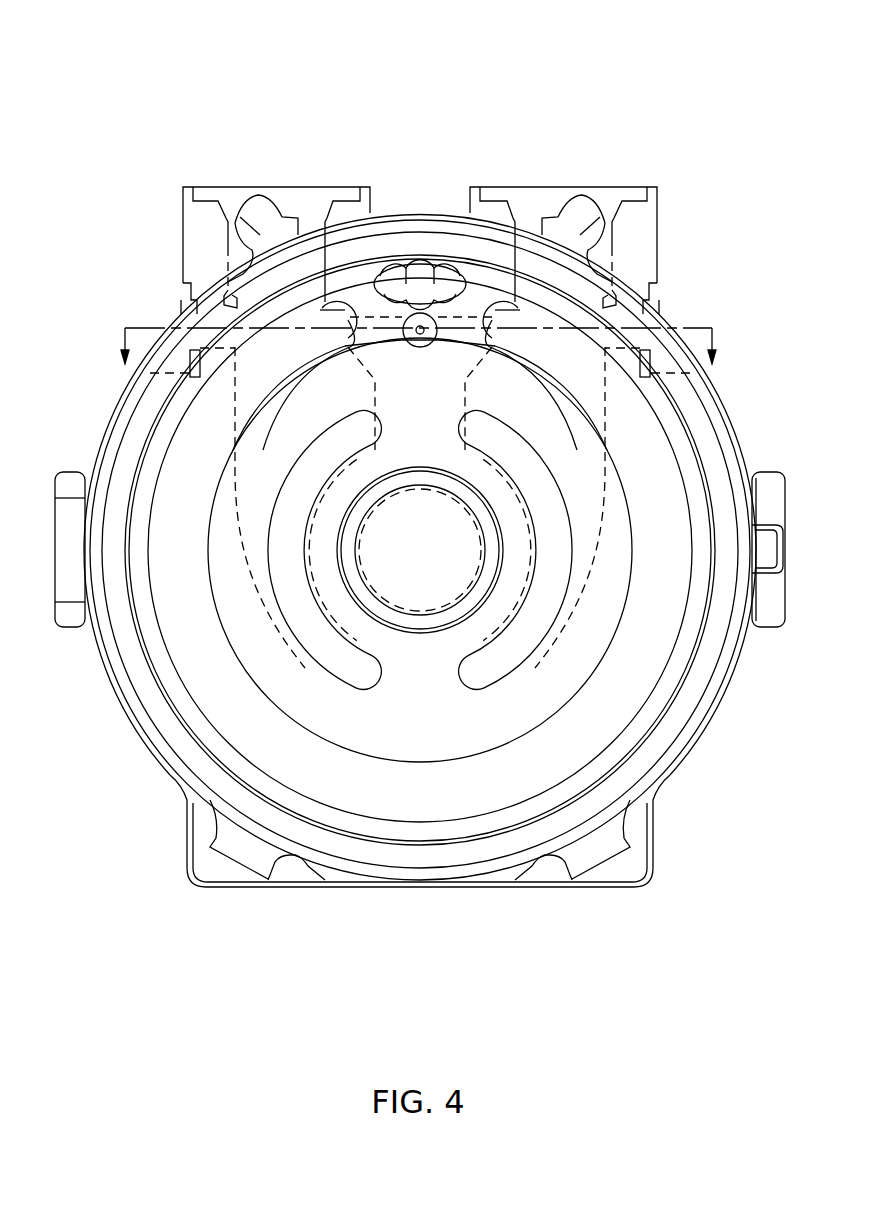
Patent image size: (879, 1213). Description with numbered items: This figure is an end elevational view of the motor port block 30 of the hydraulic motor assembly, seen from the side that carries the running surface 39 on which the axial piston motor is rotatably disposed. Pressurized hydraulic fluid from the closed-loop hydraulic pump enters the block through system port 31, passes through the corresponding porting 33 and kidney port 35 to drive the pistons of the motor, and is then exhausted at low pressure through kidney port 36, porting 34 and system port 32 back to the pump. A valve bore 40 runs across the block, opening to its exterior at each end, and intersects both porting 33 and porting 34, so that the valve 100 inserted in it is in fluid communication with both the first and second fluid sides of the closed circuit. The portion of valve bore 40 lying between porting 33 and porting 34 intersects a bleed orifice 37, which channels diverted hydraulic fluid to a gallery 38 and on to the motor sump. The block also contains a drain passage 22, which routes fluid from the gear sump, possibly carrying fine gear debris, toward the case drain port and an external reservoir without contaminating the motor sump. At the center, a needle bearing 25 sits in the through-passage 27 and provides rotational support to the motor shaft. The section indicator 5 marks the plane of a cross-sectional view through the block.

The motor port block 30 is at (100, 86).
The valve 100 is at (162, 302).
The system port 31 is at (308, 186).
The system port 32 is at (537, 186).
The porting 33 is at (235, 395).
The porting 34 is at (605, 395).
The kidney port 35 is at (352, 428).
The kidney port 36 is at (488, 428).
The bleed orifice 37 is at (424, 336).
The gallery 38 is at (413, 343).
The running surface 39 is at (408, 731).
The valve bore 40 is at (382, 316).
The drain passage 22 is at (447, 292).
The needle bearing 25 is at (424, 620).
The through-passage 27 is at (427, 497).
The section line 5- 5 is at (419, 361).